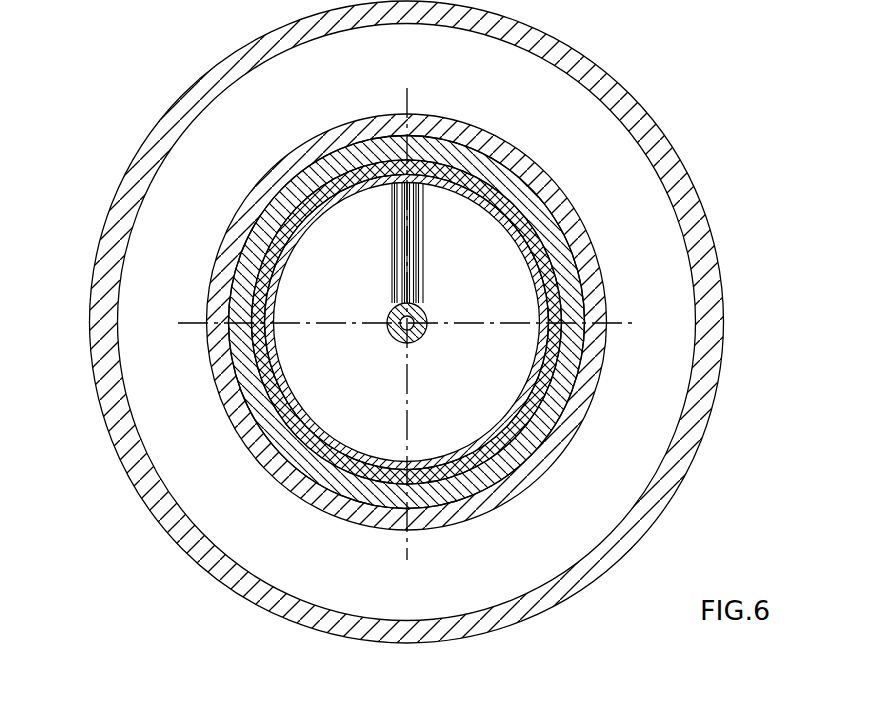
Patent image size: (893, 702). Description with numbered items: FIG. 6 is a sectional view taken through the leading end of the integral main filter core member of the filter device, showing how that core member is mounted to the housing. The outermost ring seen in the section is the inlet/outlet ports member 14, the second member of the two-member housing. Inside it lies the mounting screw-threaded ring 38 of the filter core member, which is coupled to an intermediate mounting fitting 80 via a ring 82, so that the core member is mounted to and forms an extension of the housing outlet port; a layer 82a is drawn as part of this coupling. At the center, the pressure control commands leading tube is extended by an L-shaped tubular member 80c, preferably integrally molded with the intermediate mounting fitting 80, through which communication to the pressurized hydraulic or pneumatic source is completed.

The inlet/outlet ports member 14 is at (142, 488).
The mounting screw-threaded ring 38 is at (583, 280).
The ring 82 is at (510, 495).
The braided layer of sleeve 82a is at (498, 440).
The intermediate mounting fitting 80 is at (535, 390).
The L-shaped tubular member 80c is at (413, 256).